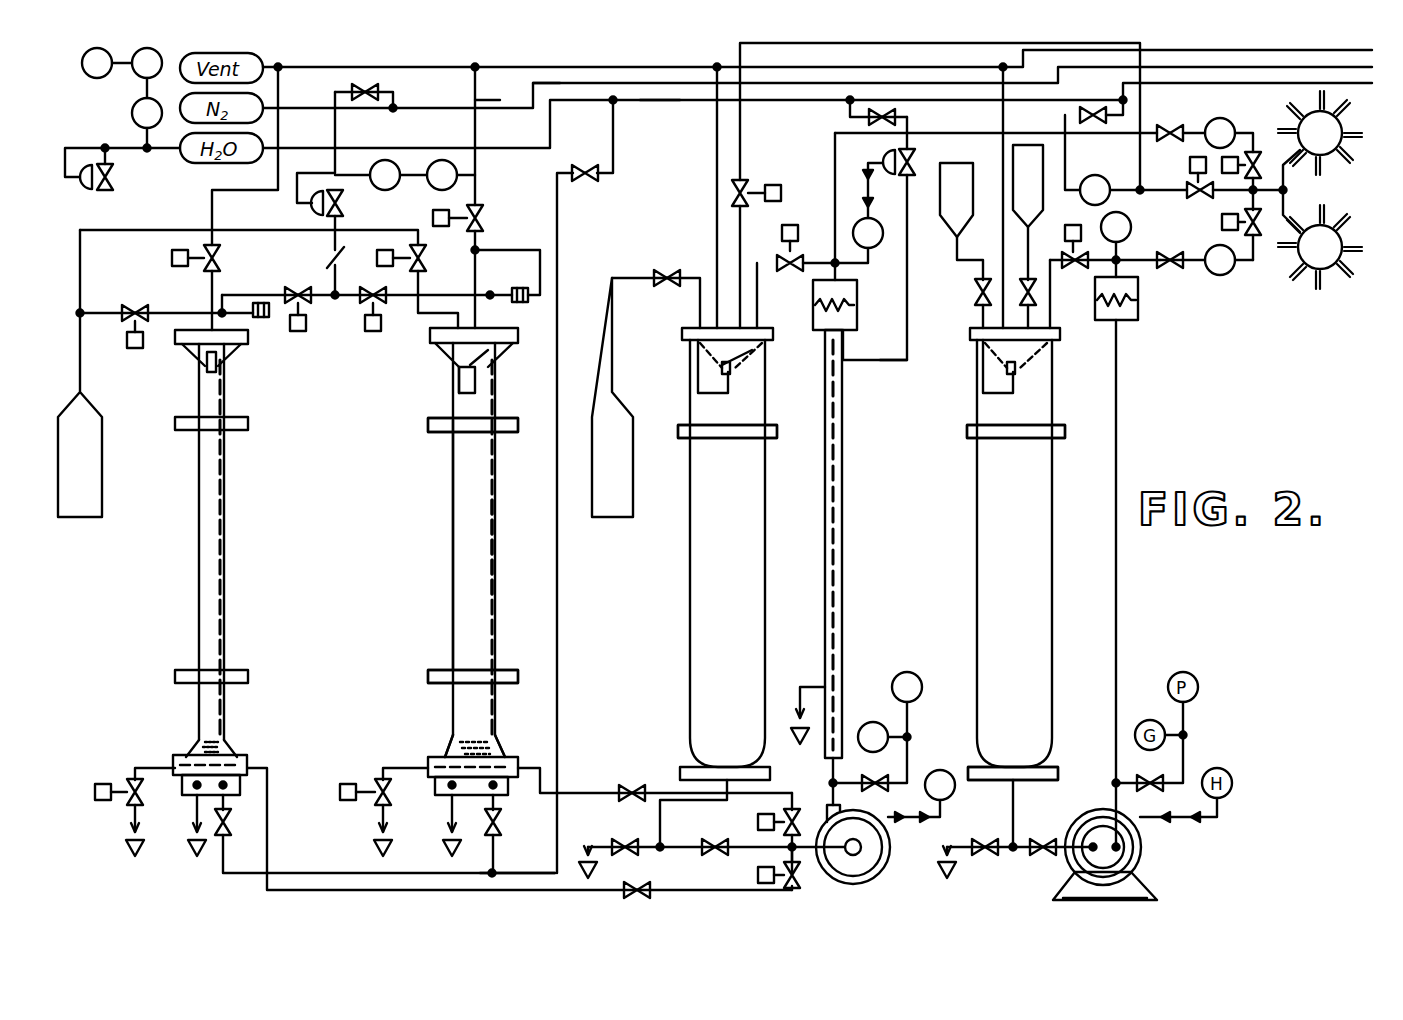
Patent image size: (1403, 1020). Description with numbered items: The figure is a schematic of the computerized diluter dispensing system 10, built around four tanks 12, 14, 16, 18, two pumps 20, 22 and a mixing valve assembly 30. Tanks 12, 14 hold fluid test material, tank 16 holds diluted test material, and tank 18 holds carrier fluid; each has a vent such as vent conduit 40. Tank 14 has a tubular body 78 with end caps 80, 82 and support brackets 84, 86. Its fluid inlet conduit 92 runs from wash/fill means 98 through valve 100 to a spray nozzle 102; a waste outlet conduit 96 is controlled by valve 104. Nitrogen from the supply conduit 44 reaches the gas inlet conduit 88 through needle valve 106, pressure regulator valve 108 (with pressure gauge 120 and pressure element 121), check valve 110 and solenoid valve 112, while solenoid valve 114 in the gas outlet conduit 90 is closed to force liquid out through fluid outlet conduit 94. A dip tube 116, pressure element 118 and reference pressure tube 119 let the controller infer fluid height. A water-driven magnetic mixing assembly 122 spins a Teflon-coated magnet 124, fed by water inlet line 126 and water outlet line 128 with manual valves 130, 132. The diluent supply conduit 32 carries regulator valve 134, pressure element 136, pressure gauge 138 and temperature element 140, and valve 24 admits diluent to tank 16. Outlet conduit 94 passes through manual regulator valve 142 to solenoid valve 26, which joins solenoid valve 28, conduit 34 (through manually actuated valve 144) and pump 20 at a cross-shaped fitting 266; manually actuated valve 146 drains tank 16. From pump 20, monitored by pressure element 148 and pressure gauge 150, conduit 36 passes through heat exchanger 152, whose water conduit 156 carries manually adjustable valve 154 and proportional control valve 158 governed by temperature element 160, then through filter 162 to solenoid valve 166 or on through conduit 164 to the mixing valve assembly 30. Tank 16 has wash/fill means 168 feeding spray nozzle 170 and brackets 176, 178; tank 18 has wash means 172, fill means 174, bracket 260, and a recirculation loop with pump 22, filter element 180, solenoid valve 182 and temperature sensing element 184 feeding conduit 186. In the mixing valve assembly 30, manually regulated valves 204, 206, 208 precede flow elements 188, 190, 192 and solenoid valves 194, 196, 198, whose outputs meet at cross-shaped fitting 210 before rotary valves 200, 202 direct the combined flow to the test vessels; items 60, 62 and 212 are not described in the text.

The dispensing system 10 is at (128, 590).
The tank 12 is at (197, 612).
The tank 14 is at (450, 554).
The tank 16 is at (685, 606).
The tank 18 is at (972, 567).
The pump 20 is at (875, 878).
The pump 22 is at (1140, 875).
The valve 24 is at (775, 185).
The solenoid valve 26 is at (780, 815).
The solenoid valve 28 is at (785, 890).
The mixing valve assembly 30 is at (1245, 340).
The diluent supply conduit 32 is at (655, 105).
The conduit 34 is at (660, 820).
The conduit 36 is at (830, 783).
The vent conduit 40 is at (715, 234).
The nitrogen supply conduit 44 is at (533, 90).
The outlet 60 is at (1345, 215).
The outlet 62 is at (1352, 285).
The tubular body 78 is at (450, 468).
The end cap 80 is at (432, 350).
The end cap 82 is at (440, 757).
The support bracket 84 is at (518, 428).
The support bracket 86 is at (508, 672).
The gas inlet conduit 88 is at (447, 295).
The gas outlet conduit 90 is at (480, 128).
The fluid inlet conduit 92 is at (418, 318).
The fluid outlet conduit 94 is at (518, 768).
The fluid outlet conduit 96 is at (380, 769).
The wash/fill means 98 is at (102, 495).
The valve 100 is at (388, 250).
The spray nozzle 102 is at (485, 360).
The valve 104 is at (348, 800).
The needle valve 106 is at (378, 92).
The pressure regulator valve 108 is at (318, 208).
The check valve 110 is at (330, 255).
The solenoid valve 112 is at (303, 331).
The solenoid valve 114 is at (483, 210).
The dip tube 116 is at (485, 538).
The pressure element 118 is at (518, 288).
The reference pressure tube 119 is at (518, 250).
The pressure gauge 120 is at (388, 160).
The pressure element 121 is at (450, 160).
The magnetic mixing assembly 122 is at (515, 788).
The Teflon-coated magnet 124 is at (470, 748).
The water inlet line 126 is at (498, 853).
The water outlet line 128 is at (450, 808).
The manually actuated valve 130 is at (578, 185).
The manually actuated valve 132 is at (500, 820).
The regulator valve 134 is at (113, 177).
The pressure element 136 is at (97, 78).
The pressure gauge 138 is at (140, 78).
The temperature element 140 is at (132, 118).
The manual regulator valve 142 is at (630, 785).
The manually actuated valve 144 is at (712, 855).
The manually actuated valve 146 is at (620, 840).
The pressure element 148 is at (920, 685).
The pressure gauge 150 is at (870, 720).
The heat exchanger 152 is at (843, 515).
The manually adjustable valve 154 is at (868, 117).
The conduit 156 is at (893, 362).
The proportional control valve 158 is at (915, 150).
The temperature element 160 is at (878, 248).
The filter 162 is at (845, 325).
The conduit 164 is at (993, 135).
The solenoid valve 166 is at (797, 225).
The wash/fill means 168 is at (596, 517).
The spray nozzle 170 is at (735, 350).
The wash means 172 is at (955, 262).
The fill means 174 is at (1028, 150).
The bracket 176 is at (775, 440).
The bracket 178 is at (680, 780).
The filter element 180 is at (1110, 330).
The solenoid valve 182 is at (1065, 236).
The temperature sensing element 184 is at (1130, 233).
The conduit 186 is at (1150, 262).
The flow element 188 is at (1115, 165).
The flow element 190 is at (1237, 110).
The flow element 192 is at (1222, 275).
The solenoid valve 194 is at (1190, 165).
The solenoid valve 196 is at (1262, 150).
The solenoid valve 198 is at (1262, 240).
The rotary valve 200 is at (1320, 133).
The rotary valve 202 is at (1320, 247).
The manually regulated valve 204 is at (1093, 105).
The manually regulated valve 206 is at (1160, 128).
The manually regulated valve 208 is at (1168, 270).
The cross-shaped fitting 210 is at (1285, 188).
The bottom flange 212 is at (1050, 770).
The bracket 260 is at (968, 440).
The cross-shaped fitting 266 is at (798, 858).